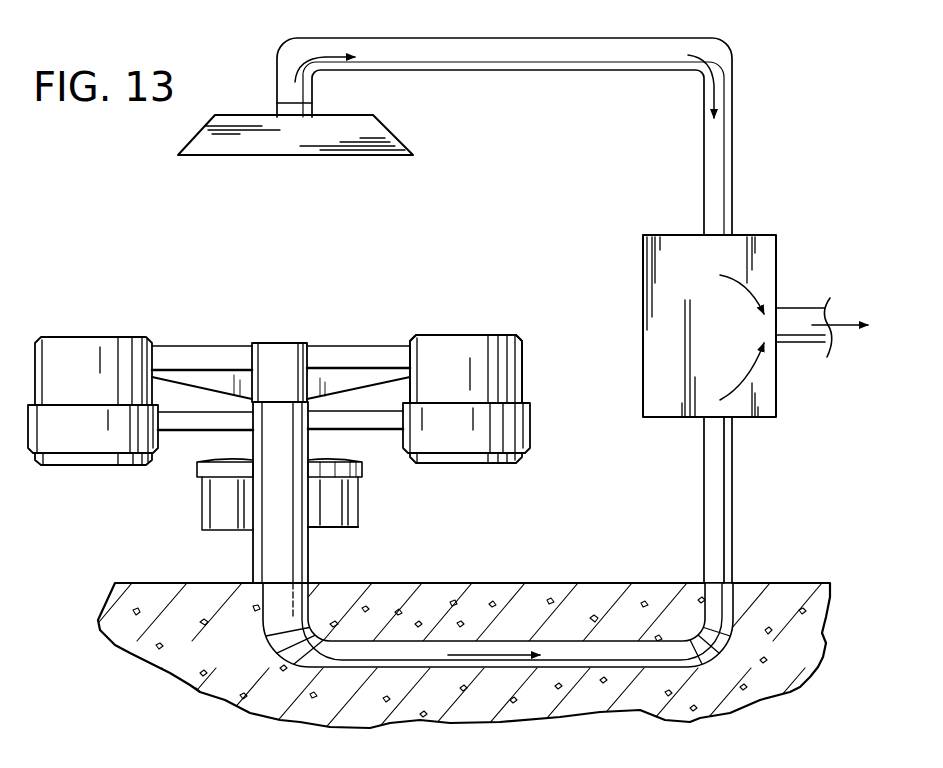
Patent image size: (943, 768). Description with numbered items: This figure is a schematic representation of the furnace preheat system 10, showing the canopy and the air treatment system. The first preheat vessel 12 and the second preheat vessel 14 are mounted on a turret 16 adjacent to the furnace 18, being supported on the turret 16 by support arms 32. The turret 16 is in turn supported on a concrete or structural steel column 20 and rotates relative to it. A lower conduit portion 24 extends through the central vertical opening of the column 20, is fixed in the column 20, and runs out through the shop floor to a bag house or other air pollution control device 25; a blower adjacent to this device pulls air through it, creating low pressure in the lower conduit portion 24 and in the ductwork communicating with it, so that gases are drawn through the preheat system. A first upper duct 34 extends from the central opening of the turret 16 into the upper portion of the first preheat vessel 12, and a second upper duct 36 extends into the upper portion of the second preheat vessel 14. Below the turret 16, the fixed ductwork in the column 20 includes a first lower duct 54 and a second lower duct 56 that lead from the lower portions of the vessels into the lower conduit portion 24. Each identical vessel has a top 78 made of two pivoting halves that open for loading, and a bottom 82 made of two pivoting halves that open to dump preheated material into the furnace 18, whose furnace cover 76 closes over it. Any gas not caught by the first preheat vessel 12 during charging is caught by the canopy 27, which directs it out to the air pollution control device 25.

The furnace preheat system 10 is at (244, 271).
The first preheat vessel 12 is at (505, 334).
The second preheat vessel 14 is at (285, 396).
The turret 16 is at (238, 423).
The furnace 18 is at (357, 529).
The column 20 is at (258, 553).
The lower conduit portion 24 is at (590, 648).
The air pollution control device 25 is at (777, 400).
The canopy 27 is at (408, 150).
The support arms 32 is at (230, 380).
The first upper duct 34 is at (327, 355).
The second upper duct 36 is at (174, 358).
The first lower duct 54 is at (350, 425).
The second lower duct 56 is at (200, 426).
The furnace cover 76 is at (355, 479).
The top 78 is at (70, 337).
The bottom 82 is at (95, 466).